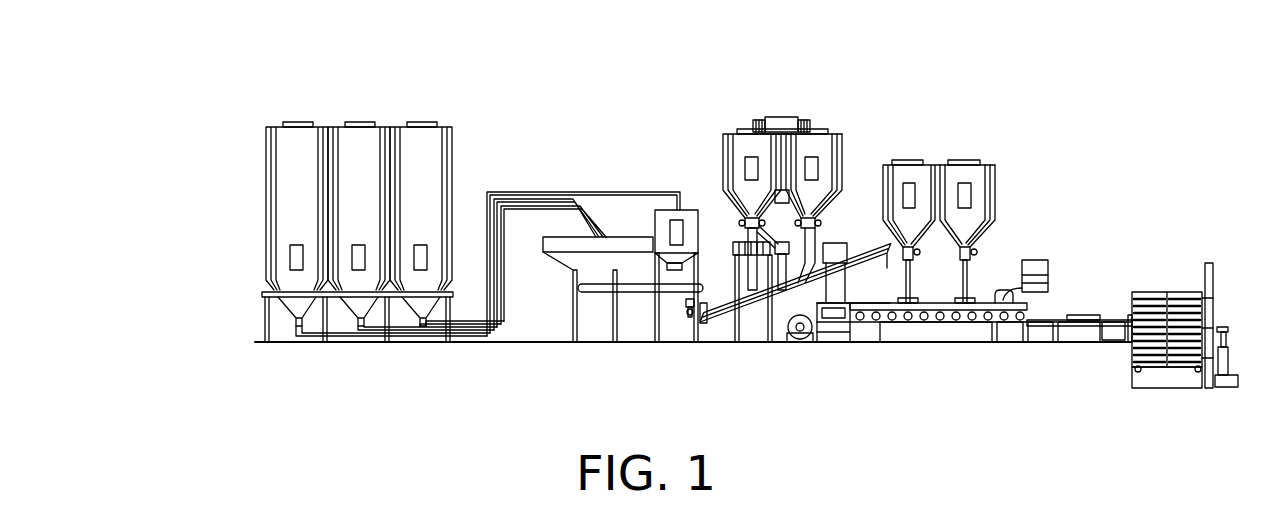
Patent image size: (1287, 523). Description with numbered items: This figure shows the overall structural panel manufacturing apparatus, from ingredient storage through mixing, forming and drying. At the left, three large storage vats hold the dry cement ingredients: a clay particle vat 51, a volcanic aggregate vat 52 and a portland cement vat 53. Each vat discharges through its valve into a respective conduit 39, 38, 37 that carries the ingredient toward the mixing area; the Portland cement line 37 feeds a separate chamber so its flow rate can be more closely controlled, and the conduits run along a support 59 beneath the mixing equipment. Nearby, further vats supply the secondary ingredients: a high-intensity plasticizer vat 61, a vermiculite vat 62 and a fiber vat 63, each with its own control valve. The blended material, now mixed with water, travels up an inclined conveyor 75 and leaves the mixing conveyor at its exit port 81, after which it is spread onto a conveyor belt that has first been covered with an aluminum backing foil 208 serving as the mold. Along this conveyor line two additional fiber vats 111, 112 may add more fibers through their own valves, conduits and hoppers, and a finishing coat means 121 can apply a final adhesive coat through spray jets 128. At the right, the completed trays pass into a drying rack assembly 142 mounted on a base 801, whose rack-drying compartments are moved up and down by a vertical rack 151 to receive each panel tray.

The clay particle vat 51 is at (305, 138).
The volcanic aggregate vat 52 is at (360, 140).
The portland cement vat 53 is at (418, 143).
The conduit 38 is at (540, 195).
The Portland cement line 37 is at (636, 198).
The conduit 39 is at (507, 310).
The support frame 59 is at (632, 268).
The vermiculite vat 62 is at (690, 212).
The high-intensity plasticizer vat 61 is at (750, 143).
The fiber vat 63 is at (825, 143).
The inclined conveyor 75 is at (715, 316).
The aluminum backing foil 208 is at (797, 320).
The exit port 81 is at (913, 276).
The fiber vat 111 is at (900, 175).
The fiber vat 112 is at (958, 175).
The finishing coat means 121 is at (1048, 260).
The spray jets 128 is at (1015, 283).
The drying rack assembly 142 is at (1207, 262).
The stacker 801 is at (1132, 355).
The vertical rack 151 is at (1212, 388).